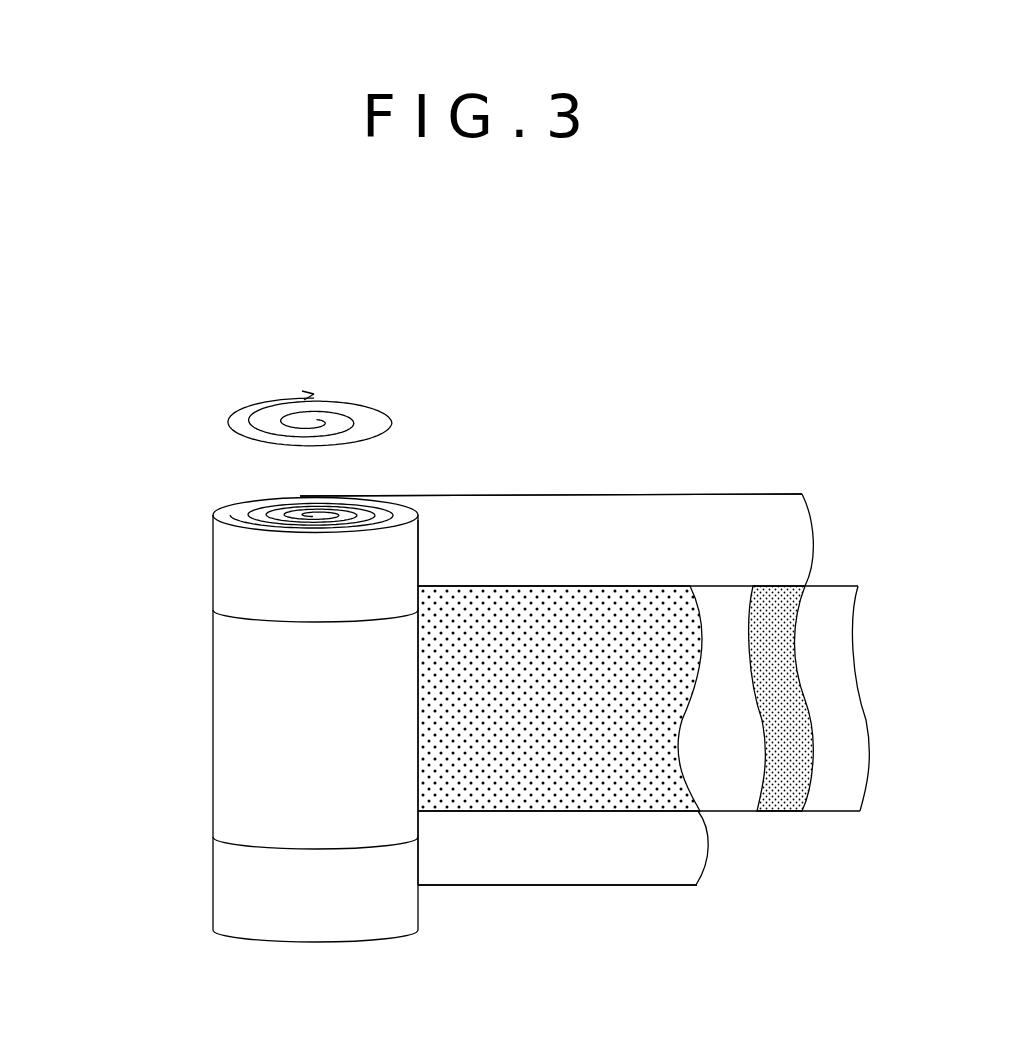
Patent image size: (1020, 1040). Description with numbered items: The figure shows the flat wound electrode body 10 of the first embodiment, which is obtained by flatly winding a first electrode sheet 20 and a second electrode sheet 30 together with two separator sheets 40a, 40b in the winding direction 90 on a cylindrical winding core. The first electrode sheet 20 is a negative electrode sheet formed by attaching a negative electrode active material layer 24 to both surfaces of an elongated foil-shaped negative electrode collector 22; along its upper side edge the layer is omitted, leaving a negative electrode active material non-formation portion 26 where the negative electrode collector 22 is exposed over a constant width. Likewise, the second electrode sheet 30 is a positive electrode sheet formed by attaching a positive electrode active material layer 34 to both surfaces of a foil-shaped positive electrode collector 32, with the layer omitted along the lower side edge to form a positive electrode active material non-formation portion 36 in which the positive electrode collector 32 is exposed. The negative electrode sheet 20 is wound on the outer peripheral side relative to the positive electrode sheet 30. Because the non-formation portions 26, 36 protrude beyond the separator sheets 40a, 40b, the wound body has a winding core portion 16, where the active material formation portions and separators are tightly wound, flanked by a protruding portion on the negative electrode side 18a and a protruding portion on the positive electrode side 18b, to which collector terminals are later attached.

The flat wound electrode body 10 is at (185, 428).
The winding direction 90 is at (310, 398).
The winding core portion 16 is at (212, 722).
The protruding portion on the negative electrode side 18a is at (212, 572).
The protruding portion on the positive electrode side 18b is at (212, 882).
The first electrode sheet 20 is at (525, 495).
The negative electrode collector 22 is at (608, 495).
The negative electrode active material non-formation portion 26 is at (478, 525).
The negative electrode active material layer 24 is at (793, 600).
The positive electrode active material layer 34 is at (646, 797).
The separator sheet 40a is at (830, 790).
The separator sheet 40b is at (741, 790).
The second electrode sheet 30 is at (455, 887).
The positive electrode collector 32 is at (528, 887).
The positive electrode active material non-formation portion 36 is at (598, 868).